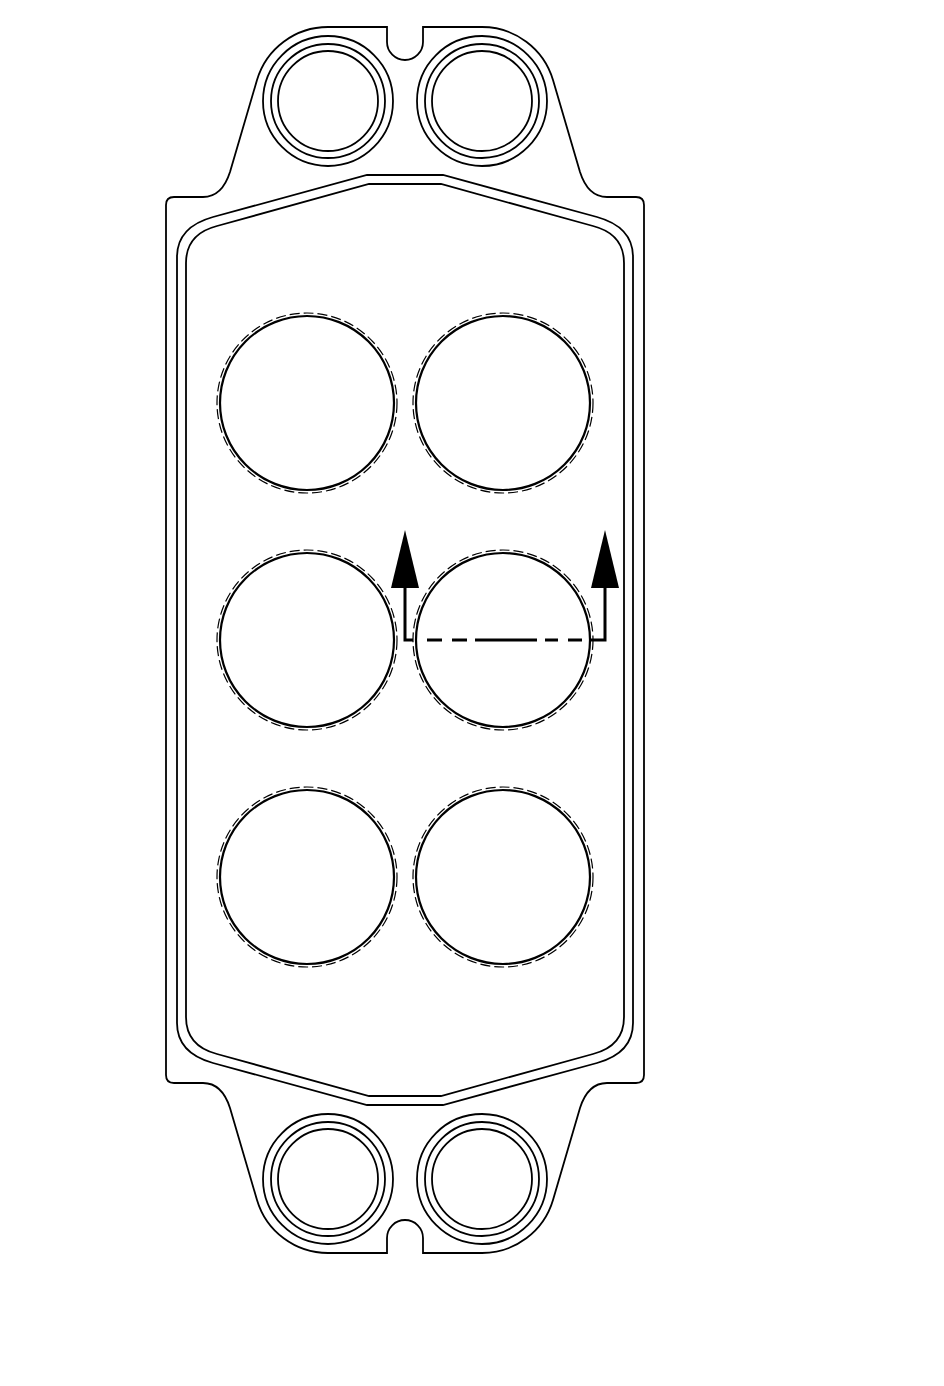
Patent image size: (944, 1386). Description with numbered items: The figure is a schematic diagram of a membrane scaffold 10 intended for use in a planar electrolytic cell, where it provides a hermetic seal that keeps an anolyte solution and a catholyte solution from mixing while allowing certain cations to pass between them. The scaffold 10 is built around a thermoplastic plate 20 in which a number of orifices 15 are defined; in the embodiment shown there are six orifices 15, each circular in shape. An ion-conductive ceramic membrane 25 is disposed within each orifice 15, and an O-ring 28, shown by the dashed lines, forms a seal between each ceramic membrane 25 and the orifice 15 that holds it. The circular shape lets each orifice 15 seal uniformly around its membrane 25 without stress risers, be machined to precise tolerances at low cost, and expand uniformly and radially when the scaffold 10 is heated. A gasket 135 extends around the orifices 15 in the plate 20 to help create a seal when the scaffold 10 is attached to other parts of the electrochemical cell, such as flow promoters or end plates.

The membrane scaffold 10 is at (614, 130).
The thermoplastic plate 20 is at (187, 210).
The gasket 135 is at (628, 320).
The orifice 15 is at (311, 298).
The O-ring 28 is at (335, 315).
The ion-conductive ceramic membrane 25 is at (318, 409).